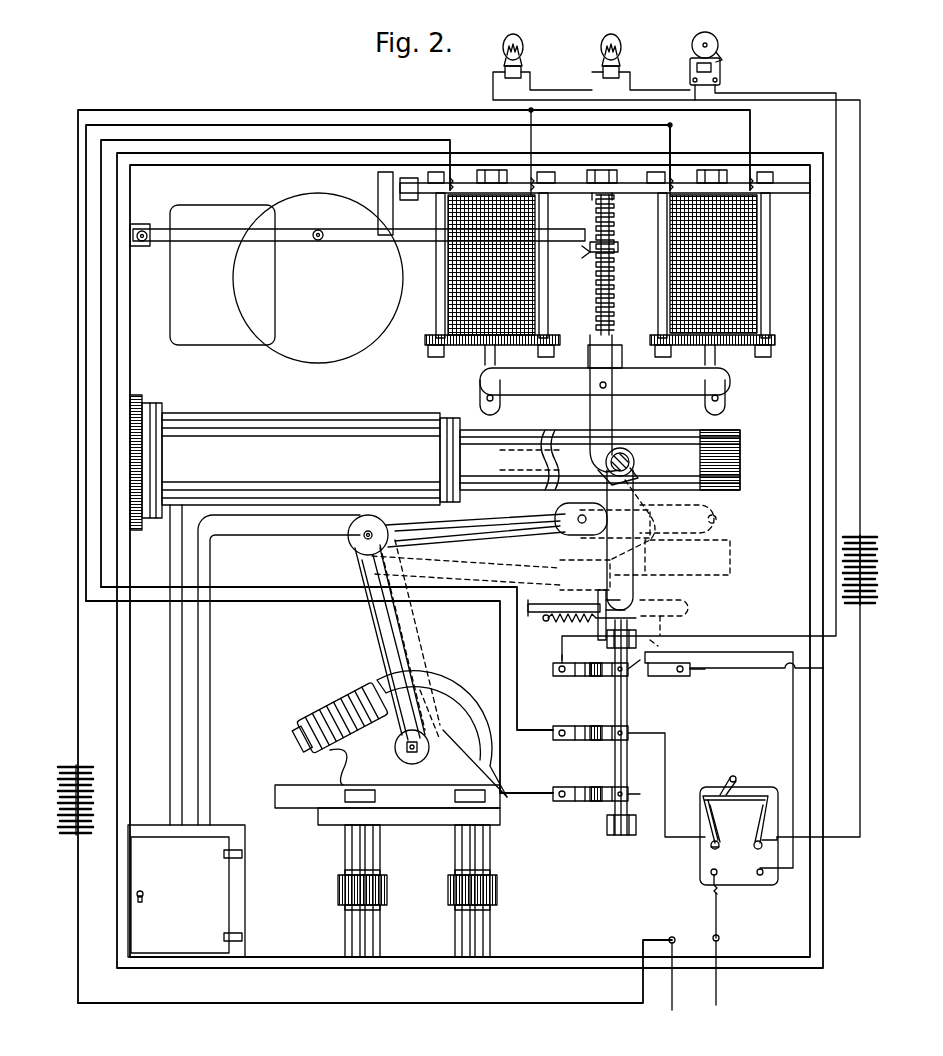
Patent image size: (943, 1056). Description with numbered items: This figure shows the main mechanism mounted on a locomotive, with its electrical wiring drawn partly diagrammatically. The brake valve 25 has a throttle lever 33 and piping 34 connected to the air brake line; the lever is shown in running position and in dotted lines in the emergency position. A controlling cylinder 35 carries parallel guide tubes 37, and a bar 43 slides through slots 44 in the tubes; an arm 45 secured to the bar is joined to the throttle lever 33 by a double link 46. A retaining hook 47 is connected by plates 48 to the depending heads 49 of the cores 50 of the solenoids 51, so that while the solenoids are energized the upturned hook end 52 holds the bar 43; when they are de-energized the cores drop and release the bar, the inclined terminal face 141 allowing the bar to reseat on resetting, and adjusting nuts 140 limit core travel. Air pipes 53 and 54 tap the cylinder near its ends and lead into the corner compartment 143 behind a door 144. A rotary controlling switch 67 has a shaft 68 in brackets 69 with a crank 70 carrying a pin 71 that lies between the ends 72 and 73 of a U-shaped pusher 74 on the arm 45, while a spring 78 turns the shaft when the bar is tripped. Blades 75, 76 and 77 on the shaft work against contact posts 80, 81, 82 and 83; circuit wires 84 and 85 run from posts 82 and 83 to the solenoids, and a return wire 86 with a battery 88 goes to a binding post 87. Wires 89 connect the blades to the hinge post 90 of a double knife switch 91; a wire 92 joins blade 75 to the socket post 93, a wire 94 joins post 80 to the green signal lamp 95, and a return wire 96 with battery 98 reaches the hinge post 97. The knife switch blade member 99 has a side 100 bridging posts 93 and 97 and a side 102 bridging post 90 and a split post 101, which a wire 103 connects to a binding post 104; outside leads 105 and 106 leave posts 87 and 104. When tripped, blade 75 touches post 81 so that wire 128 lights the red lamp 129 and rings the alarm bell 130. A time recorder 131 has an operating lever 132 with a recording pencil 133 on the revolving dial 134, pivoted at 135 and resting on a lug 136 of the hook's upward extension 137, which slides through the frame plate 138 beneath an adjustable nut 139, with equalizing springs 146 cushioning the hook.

The brake valve 25 is at (391, 777).
The throttle lever 33 is at (378, 656).
The piping 34 is at (458, 935).
The controlling cylinder 35 is at (285, 462).
The guide tubes 37 is at (508, 432).
The bar 43 is at (622, 448).
The slots 44 is at (718, 478).
The arm 45 is at (630, 554).
The double link 46 is at (508, 522).
The retaining hook 47 is at (590, 410).
The plates 48 is at (605, 370).
The depending heads 49 is at (478, 393).
The cores 50 is at (480, 352).
The solenoids 51 is at (752, 275).
The hook end 52 is at (614, 481).
The air pipe 53 is at (176, 690).
The air pipe 54 is at (208, 707).
The rotary controlling switch 67 is at (596, 701).
The shaft 68 is at (627, 710).
The brackets 69 is at (618, 836).
The crank 70 is at (605, 634).
The pin 71 is at (604, 590).
The pusher end 72 is at (618, 610).
The pusher end 73 is at (528, 598).
The U-shaped pusher 74 is at (568, 604).
The switch blade 75 is at (596, 663).
The switch blade 76 is at (600, 748).
The switch blade 77 is at (598, 805).
The spring 78 is at (544, 618).
The contact post 80 is at (582, 676).
The contact post 81 is at (656, 676).
The contact post 82 is at (594, 740).
The contact post 83 is at (585, 801).
The circuit wire 84 is at (540, 722).
The circuit wire 85 is at (520, 793).
The return wire 86 is at (290, 110).
The binding post 87 is at (670, 936).
The battery 88 is at (78, 836).
The wires 89 is at (656, 775).
The hinge post 90 is at (710, 846).
The double knife switch 91 is at (768, 795).
The wire 92 is at (793, 709).
The socket post 93 is at (762, 878).
The wire 94 is at (823, 452).
The green signal lamp 95 is at (525, 45).
The return wire 96 is at (860, 223).
The hinge post 97 is at (755, 846).
The battery 98 is at (843, 540).
The knife switch blade member 99 is at (729, 790).
The side of knife switch member 100 is at (758, 820).
The split post 101 is at (710, 873).
The side of knife switch member 102 is at (706, 816).
The wire 103 is at (716, 907).
The binding post 104 is at (720, 938).
The outside lead 105 is at (668, 1003).
The outside lead 106 is at (718, 997).
The wire 128 is at (836, 419).
The red lamp 129 is at (622, 45).
The alarm bell 130 is at (722, 66).
The time recorder 131 is at (222, 275).
The operating lever 132 is at (352, 232).
The recording pencil 133 is at (320, 242).
The revolving dial 134 is at (318, 278).
The pivot 135 is at (148, 230).
The lug 136 is at (588, 258).
The upward extension 137 is at (618, 246).
The frame plate 138 is at (612, 208).
The adjustable nut 139 is at (598, 170).
The adjusting nuts 140 is at (478, 170).
The inclined terminal face 141 is at (633, 460).
The corner compartment 143 is at (211, 891).
The door 144 is at (186, 895).
The equalizing springs 146 is at (596, 290).